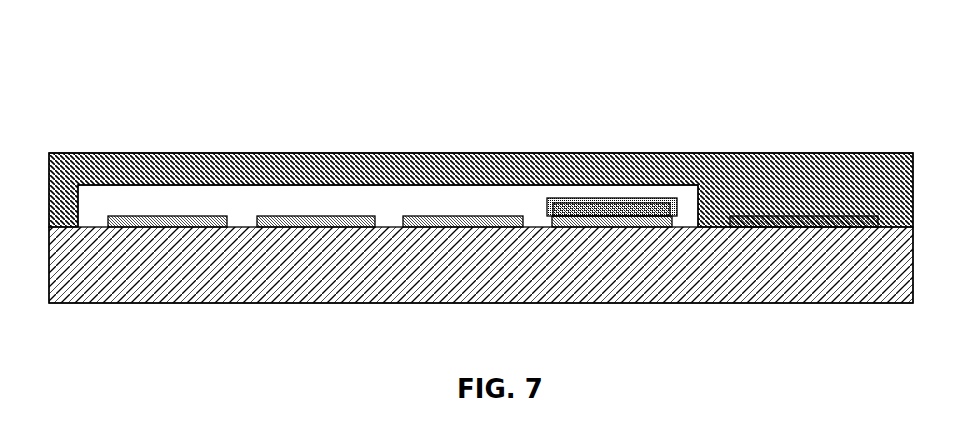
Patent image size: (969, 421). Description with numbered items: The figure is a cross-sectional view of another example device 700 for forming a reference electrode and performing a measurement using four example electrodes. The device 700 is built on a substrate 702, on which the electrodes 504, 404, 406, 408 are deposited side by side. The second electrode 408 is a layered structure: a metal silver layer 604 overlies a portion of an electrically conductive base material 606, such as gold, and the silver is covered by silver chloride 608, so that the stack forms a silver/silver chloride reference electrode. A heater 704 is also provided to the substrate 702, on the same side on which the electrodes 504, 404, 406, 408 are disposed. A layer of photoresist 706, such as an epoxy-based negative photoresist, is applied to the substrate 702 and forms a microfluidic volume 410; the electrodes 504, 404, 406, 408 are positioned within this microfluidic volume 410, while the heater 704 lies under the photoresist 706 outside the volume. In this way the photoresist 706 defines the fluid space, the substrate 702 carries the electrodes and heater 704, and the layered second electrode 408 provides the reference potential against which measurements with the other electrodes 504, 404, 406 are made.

The device 700 is at (822, 98).
The substrate 702 is at (257, 284).
The heater 704 is at (748, 216).
The layer of photoresist 706 is at (312, 153).
The microfluidic volume 410 is at (240, 198).
The electrode 504 is at (148, 216).
The electrode 404 is at (347, 216).
The electrode 406 is at (458, 216).
The second electrode 408 is at (621, 146).
The metal silver layer 604 is at (662, 216).
The electrically conductive base material 606 is at (592, 210).
The silver chloride 608 is at (623, 202).